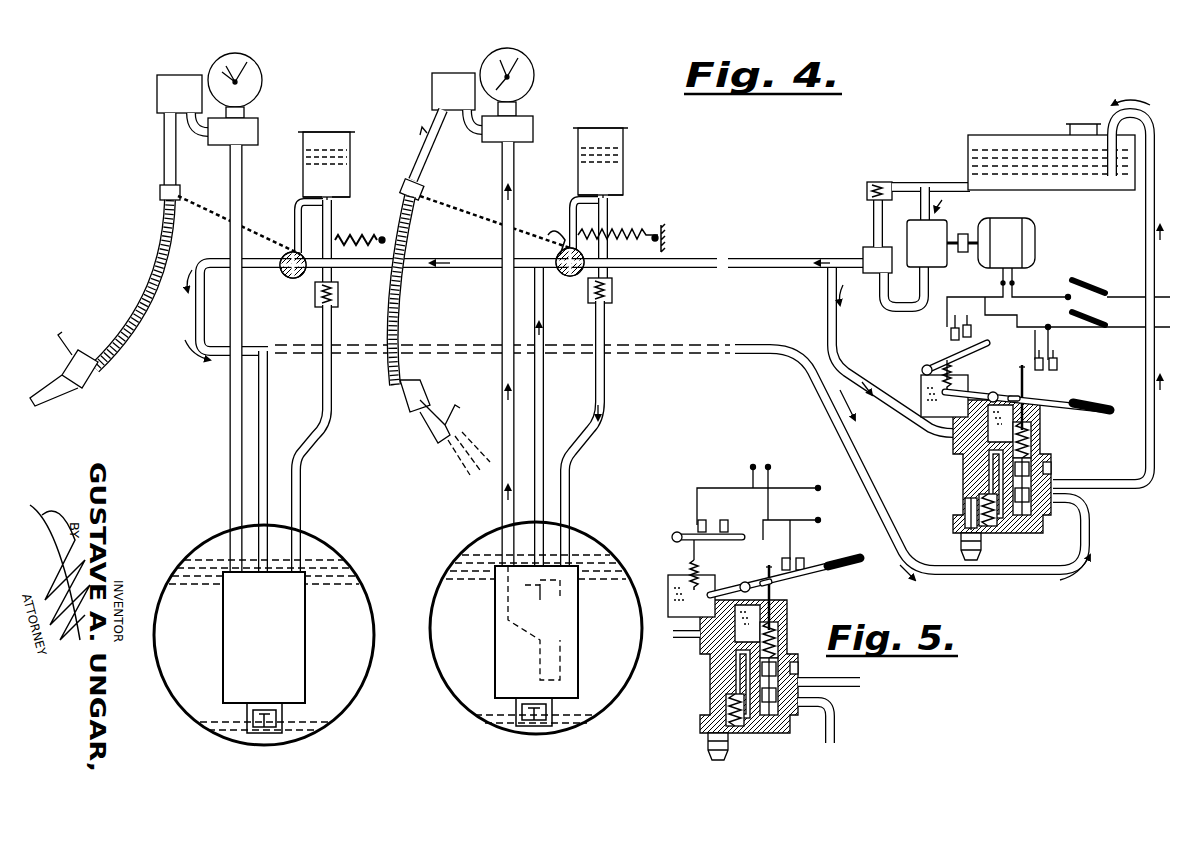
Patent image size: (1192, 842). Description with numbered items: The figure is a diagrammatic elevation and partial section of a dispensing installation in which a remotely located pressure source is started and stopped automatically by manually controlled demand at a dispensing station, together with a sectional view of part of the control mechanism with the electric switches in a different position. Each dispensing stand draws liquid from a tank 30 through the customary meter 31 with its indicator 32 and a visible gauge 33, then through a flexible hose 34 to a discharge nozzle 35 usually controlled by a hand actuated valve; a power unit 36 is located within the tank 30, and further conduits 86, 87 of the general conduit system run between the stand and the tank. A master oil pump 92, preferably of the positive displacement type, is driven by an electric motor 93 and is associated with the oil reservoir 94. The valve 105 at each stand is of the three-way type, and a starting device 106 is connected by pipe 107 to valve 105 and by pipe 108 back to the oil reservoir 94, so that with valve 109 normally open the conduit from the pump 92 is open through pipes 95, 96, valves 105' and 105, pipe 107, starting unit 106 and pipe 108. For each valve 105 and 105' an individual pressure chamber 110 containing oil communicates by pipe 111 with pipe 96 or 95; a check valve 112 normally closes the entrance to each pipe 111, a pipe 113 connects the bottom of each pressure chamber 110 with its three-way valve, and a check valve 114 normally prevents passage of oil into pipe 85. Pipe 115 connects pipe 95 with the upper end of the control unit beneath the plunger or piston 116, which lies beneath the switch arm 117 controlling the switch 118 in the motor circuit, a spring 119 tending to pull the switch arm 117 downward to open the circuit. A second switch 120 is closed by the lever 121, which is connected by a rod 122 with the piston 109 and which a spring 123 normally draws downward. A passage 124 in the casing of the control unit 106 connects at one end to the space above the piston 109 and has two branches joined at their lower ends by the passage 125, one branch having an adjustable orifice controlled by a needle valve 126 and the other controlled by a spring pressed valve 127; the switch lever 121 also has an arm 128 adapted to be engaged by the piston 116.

In FIG. 4, the tank 30 is at (192, 548).
In FIG. 4, the meter 31 is at (255, 128).
In FIG. 4, the indicator 32 is at (255, 76).
In FIG. 4, the visible gauge 33 is at (165, 90).
In FIG. 4, the flexible hose 34 is at (124, 343).
In FIG. 4, the discharge nozzle 35 is at (95, 383).
In FIG. 4, the power unit 36 is at (236, 630).
In FIG. 4, the pipe 85 is at (310, 455).
In FIG. 4, the pipe 86 is at (268, 404).
In FIG. 4, the supply pipe 87 is at (230, 462).
In FIG. 4, the master oil pump 92 is at (937, 263).
In FIG. 4, the electric motor 93 is at (1040, 238).
In FIG. 5, the electric motor 93 is at (759, 496).
In FIG. 4, the supply tank 94 is at (1018, 146).
In FIG. 4, the pipe 95 is at (768, 258).
In FIG. 4, the pipe 96 is at (447, 258).
In FIG. 4, the three-way valve 105 is at (330, 283).
In FIG. 4, the three-way valve 105' is at (606, 278).
In FIG. 4, the starting device 106 is at (974, 466).
In FIG. 5, the starting device 106 is at (723, 666).
In FIG. 4, the pipe 107 is at (200, 316).
In FIG. 5, the pipe 107 is at (845, 726).
In FIG. 4, the pipe 108 is at (1146, 215).
In FIG. 5, the pipe 108 is at (844, 699).
In FIG. 4, the valve 109 is at (1052, 482).
In FIG. 5, the valve 109 is at (810, 682).
In FIG. 4, the pressure chamber 110 is at (349, 146).
In FIG. 4, the pipe 111 is at (333, 222).
In FIG. 4, the check valve 112 is at (330, 203).
In FIG. 4, the pipe 113 is at (300, 206).
In FIG. 4, the check valve 114 is at (333, 300).
In FIG. 4, the pipe 115 is at (830, 320).
In FIG. 4, the plunger or piston 116 is at (959, 444).
In FIG. 5, the plunger or piston 116 is at (710, 639).
In FIG. 4, the switch arm 117 is at (932, 355).
In FIG. 5, the switch arm 117 is at (692, 540).
In FIG. 4, the switch 118 is at (926, 326).
In FIG. 5, the switch 118 is at (691, 517).
In FIG. 4, the spring 119 is at (913, 378).
In FIG. 4, the second switch 120 is at (1078, 362).
In FIG. 5, the second switch 120 is at (820, 548).
In FIG. 4, the lever 121 is at (1040, 421).
In FIG. 5, the lever 121 is at (794, 579).
In FIG. 4, the rod 122 is at (1005, 390).
In FIG. 5, the rod 122 is at (800, 597).
In FIG. 4, the spring 123 is at (1050, 438).
In FIG. 5, the spring 123 is at (797, 634).
In FIG. 4, the passage 124 is at (957, 488).
In FIG. 5, the passage 124 is at (699, 695).
In FIG. 4, the passage 125 is at (993, 554).
In FIG. 4, the needle valve 126 is at (949, 548).
In FIG. 5, the needle valve 126 is at (691, 750).
In FIG. 4, the spring pressed valve 127 is at (1018, 529).
In FIG. 5, the spring pressed valve 127 is at (773, 730).
In FIG. 4, the arm 128 is at (922, 400).
In FIG. 5, the arm 128 is at (674, 587).